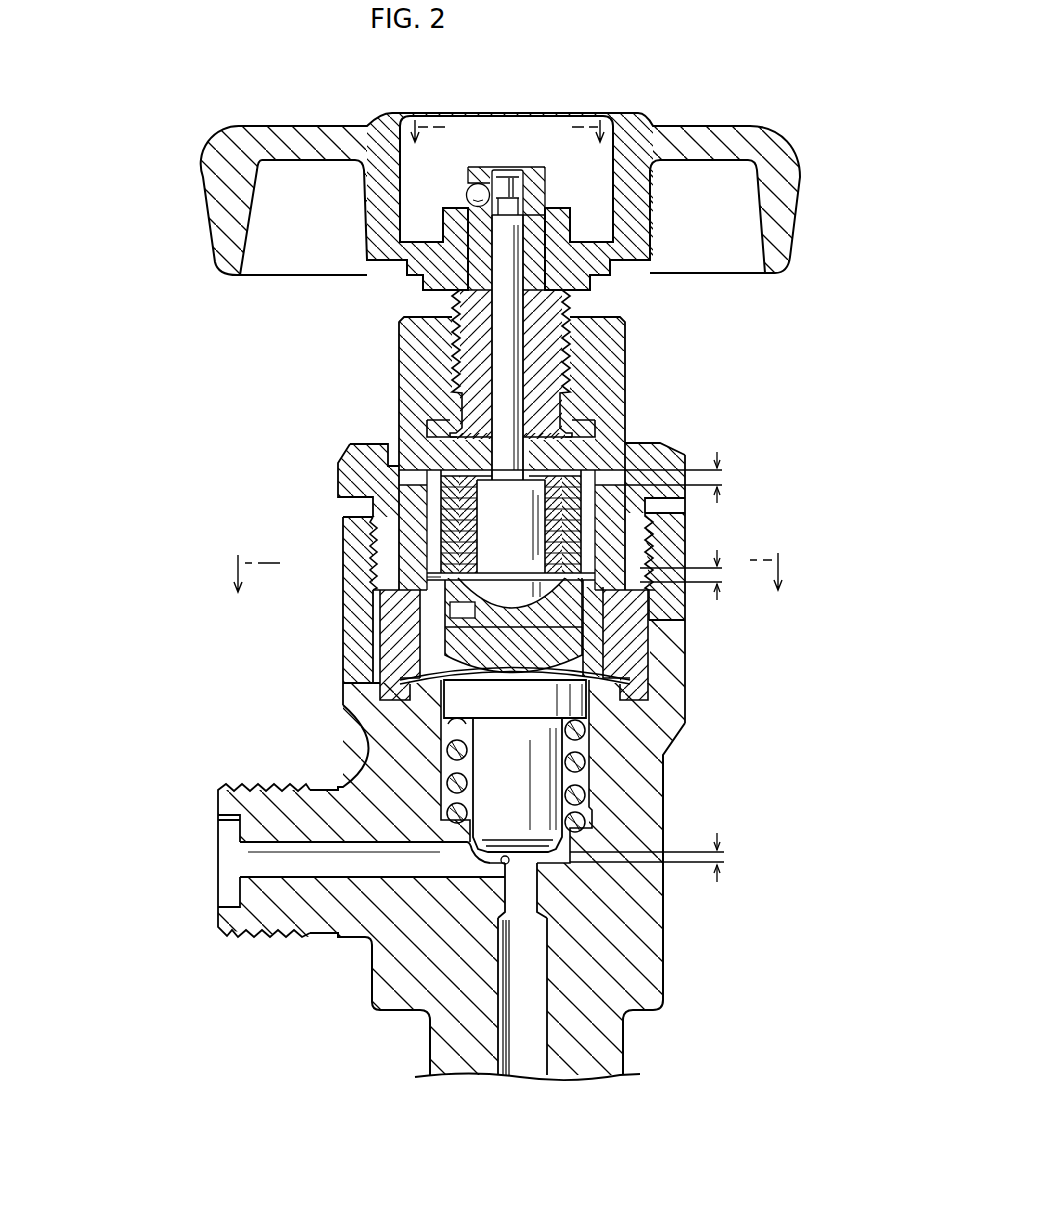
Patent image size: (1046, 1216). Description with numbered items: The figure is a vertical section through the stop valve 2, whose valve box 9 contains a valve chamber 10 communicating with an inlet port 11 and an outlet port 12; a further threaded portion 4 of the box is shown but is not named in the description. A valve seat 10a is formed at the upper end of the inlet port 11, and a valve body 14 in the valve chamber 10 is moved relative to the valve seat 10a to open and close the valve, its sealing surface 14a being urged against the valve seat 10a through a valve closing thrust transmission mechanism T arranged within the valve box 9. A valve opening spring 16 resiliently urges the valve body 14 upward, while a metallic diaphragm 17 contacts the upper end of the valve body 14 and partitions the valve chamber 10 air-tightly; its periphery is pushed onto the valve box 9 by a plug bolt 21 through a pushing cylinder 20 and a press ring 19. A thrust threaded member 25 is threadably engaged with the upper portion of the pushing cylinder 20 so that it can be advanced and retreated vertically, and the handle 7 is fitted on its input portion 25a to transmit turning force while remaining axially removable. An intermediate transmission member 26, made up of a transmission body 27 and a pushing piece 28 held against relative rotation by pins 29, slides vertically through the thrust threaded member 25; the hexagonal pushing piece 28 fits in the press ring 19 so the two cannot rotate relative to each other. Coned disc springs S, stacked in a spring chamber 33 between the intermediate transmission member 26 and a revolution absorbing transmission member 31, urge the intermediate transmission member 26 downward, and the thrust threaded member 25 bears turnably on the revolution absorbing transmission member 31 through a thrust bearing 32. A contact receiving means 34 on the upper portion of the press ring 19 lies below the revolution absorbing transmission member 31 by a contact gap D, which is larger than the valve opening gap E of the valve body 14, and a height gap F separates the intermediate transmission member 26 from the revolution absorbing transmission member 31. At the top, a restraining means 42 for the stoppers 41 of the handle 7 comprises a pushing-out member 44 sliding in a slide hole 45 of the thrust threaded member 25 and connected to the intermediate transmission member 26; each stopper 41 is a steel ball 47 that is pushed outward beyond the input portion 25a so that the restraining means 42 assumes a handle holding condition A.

The valve 2 is at (697, 378).
The inlet port 4 is at (258, 786).
The handle 7 is at (332, 128).
The valve box 9 is at (688, 692).
The valve chamber 10 is at (343, 703).
The valve seat 10a is at (505, 870).
The inlet port 11 is at (548, 1033).
The outlet port 12 is at (268, 872).
The valve body 14 is at (475, 763).
The sealing surface 14a is at (548, 862).
The valve opening spring 16 is at (445, 738).
The metallic diaphragm 17 is at (380, 666).
The press ring 19 is at (410, 633).
The pushing cylinder 20 is at (373, 588).
The plug bolt 21 is at (350, 455).
The thrust threaded member 25 is at (449, 304).
The input portion 25a is at (470, 233).
The intermediate transmission member 26 is at (455, 547).
The transmission body 27 is at (618, 535).
The pushing piece 28 is at (583, 645).
The pins 29 is at (513, 602).
The revolution absorbing transmission member 31 is at (428, 436).
The thrust bearing 32 is at (456, 400).
The spring chamber 33 is at (412, 520).
The contact receiving means 34 is at (660, 615).
The stoppers 41 is at (462, 202).
The restraining means 42 is at (495, 165).
The pushing-out member 44 is at (526, 188).
The slide hole 45 is at (520, 232).
The steel ball 47 is at (462, 200).
The handle holding condition A is at (520, 146).
The coned disc springs S is at (374, 540).
The valve closing thrust transmission mechanism T is at (433, 577).
The contact gap D is at (693, 575).
The valve opening gap E is at (659, 857).
The height gap F is at (685, 477).